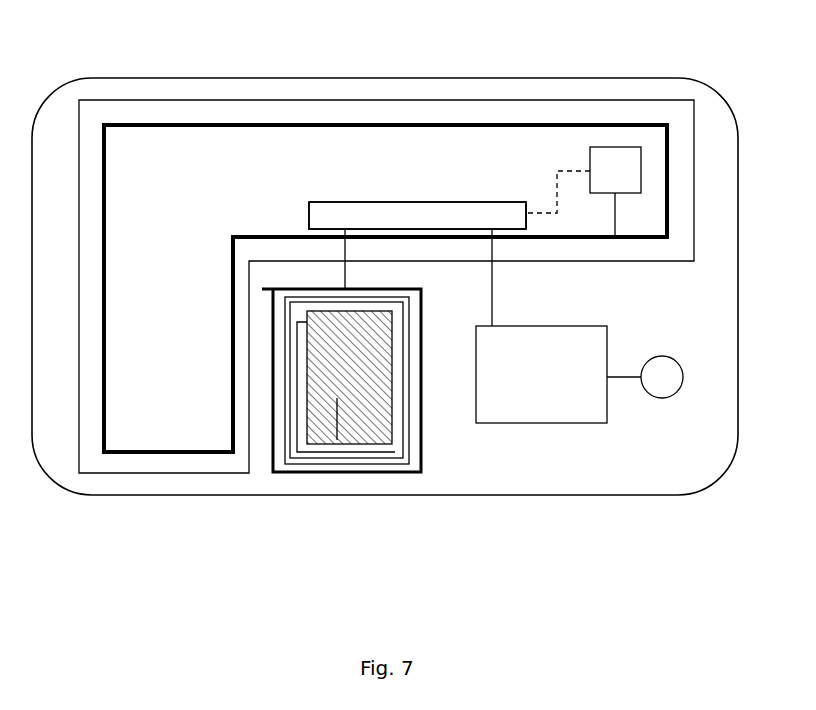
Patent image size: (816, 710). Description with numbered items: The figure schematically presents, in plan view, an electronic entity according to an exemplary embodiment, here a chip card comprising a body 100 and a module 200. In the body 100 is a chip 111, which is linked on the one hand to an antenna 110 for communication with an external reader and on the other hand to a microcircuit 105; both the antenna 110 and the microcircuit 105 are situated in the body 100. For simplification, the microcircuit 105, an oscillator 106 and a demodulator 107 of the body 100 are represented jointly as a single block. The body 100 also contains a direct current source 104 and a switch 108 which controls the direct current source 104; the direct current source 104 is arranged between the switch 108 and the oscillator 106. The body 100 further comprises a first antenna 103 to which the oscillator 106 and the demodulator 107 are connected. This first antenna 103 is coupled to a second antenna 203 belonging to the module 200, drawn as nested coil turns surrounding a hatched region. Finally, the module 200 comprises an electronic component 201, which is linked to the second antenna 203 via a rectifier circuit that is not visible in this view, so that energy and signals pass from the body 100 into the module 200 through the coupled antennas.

The body 100 is at (223, 90).
The antenna 110 is at (515, 123).
The microcircuit 105 is at (417, 264).
The oscillator 106 is at (417, 215).
The demodulator 107 is at (417, 215).
The chip 111 is at (583, 192).
The direct current source 104 is at (558, 374).
The switch 108 is at (660, 380).
The first antenna 103 is at (415, 476).
The second antenna 203 is at (364, 460).
The module 200 is at (320, 427).
The electronic component 201 is at (337, 390).